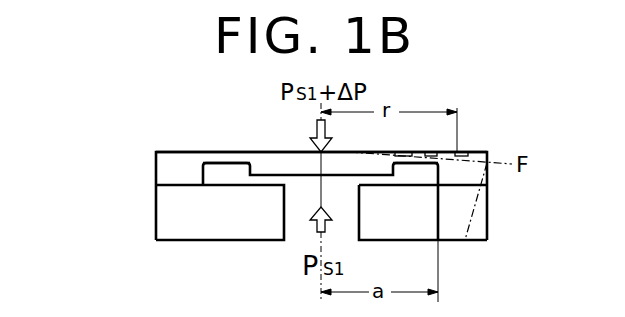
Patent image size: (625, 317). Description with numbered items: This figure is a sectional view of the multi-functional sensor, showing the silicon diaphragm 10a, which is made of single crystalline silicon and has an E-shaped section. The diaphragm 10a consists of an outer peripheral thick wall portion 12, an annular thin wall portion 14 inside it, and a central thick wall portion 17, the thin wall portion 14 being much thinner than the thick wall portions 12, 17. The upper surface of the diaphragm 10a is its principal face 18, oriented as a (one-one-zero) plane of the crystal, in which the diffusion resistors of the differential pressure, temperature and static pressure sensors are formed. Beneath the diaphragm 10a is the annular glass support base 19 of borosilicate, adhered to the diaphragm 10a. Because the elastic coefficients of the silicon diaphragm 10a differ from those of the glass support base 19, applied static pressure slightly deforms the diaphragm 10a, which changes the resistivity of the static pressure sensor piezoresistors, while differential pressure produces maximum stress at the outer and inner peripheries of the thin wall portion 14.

The silicon diaphragm 10a is at (188, 162).
The outer peripheral thick wall portion 12 is at (165, 153).
The thin wall portion 14 is at (218, 155).
The central thick wall portion 17 is at (258, 155).
The principal face 18 is at (487, 152).
The glass support base 19 is at (162, 203).